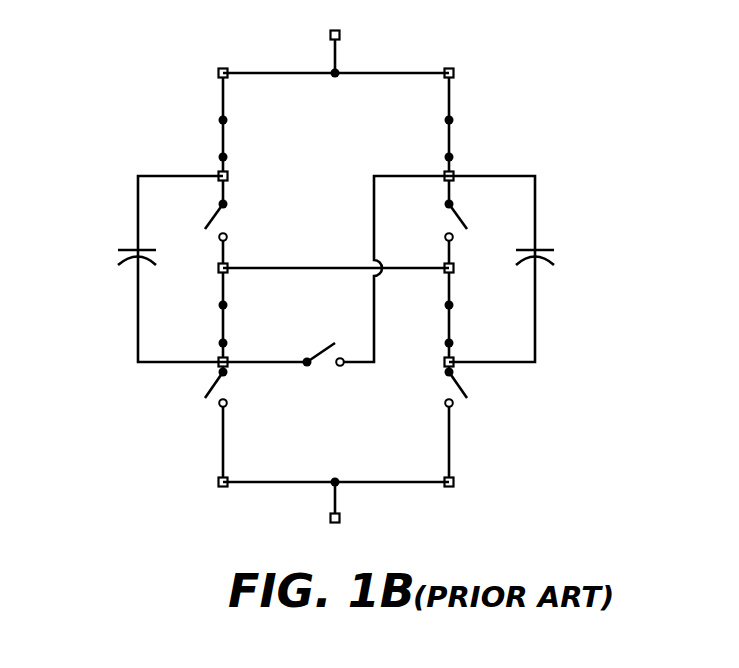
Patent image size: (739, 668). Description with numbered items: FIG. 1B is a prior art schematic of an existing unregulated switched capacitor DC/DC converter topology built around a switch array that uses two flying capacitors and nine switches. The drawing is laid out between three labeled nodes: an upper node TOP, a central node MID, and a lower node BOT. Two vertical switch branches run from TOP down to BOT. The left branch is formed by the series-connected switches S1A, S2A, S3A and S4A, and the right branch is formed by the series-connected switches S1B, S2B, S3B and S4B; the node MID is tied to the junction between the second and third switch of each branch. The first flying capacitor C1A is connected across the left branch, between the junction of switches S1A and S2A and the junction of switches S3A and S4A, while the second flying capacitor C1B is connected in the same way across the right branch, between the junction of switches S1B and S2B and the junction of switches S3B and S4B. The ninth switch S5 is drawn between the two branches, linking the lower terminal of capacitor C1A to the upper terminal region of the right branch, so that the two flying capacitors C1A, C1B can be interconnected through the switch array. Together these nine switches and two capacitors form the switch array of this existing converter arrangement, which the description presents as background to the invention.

The top terminal TOP is at (336, 41).
The mid terminal MID is at (336, 258).
The bottom terminal BOT is at (336, 515).
The switch S1A is at (246, 124).
The switch S2A is at (239, 222).
The switch S3A is at (246, 315).
The switch S4A is at (239, 422).
The switch S1B is at (423, 124).
The switch S2B is at (430, 222).
The switch S3B is at (423, 315).
The switch S4B is at (430, 422).
The switch S5 is at (283, 370).
The flying capacitor C1A is at (144, 269).
The flying capacitor C1B is at (525, 269).